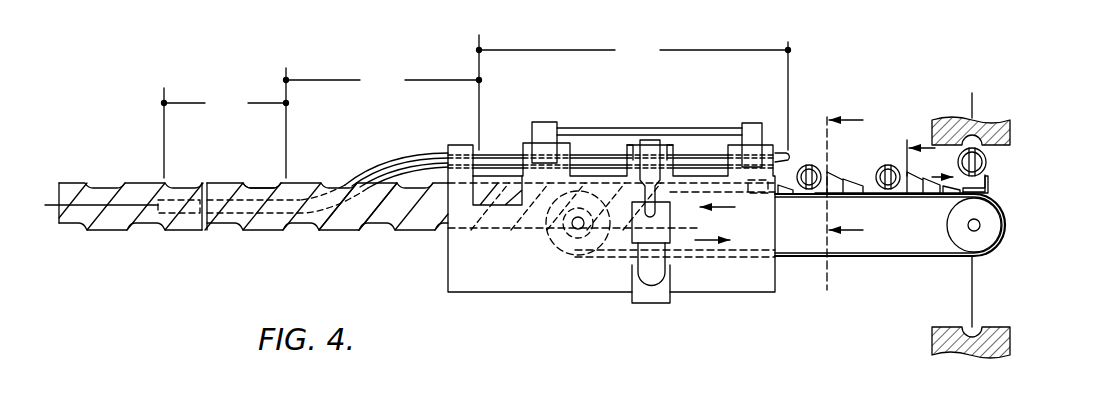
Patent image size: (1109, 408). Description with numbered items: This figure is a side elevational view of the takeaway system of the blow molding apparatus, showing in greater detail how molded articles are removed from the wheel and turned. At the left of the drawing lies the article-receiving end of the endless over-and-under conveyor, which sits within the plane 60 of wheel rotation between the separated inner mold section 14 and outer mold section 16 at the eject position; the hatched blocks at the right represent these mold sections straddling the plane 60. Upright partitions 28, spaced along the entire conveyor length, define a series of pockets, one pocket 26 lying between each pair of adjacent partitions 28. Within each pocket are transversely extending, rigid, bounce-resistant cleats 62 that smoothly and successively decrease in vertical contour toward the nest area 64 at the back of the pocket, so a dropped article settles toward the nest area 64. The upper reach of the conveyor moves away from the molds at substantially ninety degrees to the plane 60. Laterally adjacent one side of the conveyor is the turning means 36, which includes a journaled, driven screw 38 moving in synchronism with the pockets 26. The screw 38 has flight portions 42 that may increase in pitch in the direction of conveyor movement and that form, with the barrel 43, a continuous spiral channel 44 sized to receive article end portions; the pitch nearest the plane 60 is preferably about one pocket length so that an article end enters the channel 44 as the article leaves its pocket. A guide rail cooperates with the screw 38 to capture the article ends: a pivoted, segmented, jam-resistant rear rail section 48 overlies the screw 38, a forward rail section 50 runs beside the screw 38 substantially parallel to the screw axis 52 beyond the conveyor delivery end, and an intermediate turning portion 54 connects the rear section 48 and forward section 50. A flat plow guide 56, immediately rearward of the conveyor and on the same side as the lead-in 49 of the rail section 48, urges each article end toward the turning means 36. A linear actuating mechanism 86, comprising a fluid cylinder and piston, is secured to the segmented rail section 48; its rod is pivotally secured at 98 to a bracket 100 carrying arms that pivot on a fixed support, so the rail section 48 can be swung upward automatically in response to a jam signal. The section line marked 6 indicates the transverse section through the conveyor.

The inner mold section 14 is at (1010, 337).
The outer mold section 16 is at (1010, 125).
The pocket 26 is at (960, 148).
The upright partitions 28 is at (823, 170).
The turning means 36 is at (461, 114).
The screw 38 is at (364, 236).
The flight portions 42 is at (300, 190).
The barrel 43 is at (393, 215).
The spiral channel 44 is at (265, 183).
The rear rail section 48 is at (634, 95).
The lead-in 49 is at (788, 150).
The forward rail section 50 is at (225, 123).
The screw axis 52 is at (97, 205).
The intermediate turning portion 54 is at (383, 92).
The plow guide 56 is at (833, 185).
The plane of wheel rotation 60 is at (972, 292).
The cleats 62 is at (830, 170).
The nest area 64 is at (986, 188).
The linear actuating mechanism 86 is at (675, 283).
The pivotal connection 98 is at (678, 146).
The bracket 100 is at (705, 127).
The section line 6- 6 is at (839, 272).